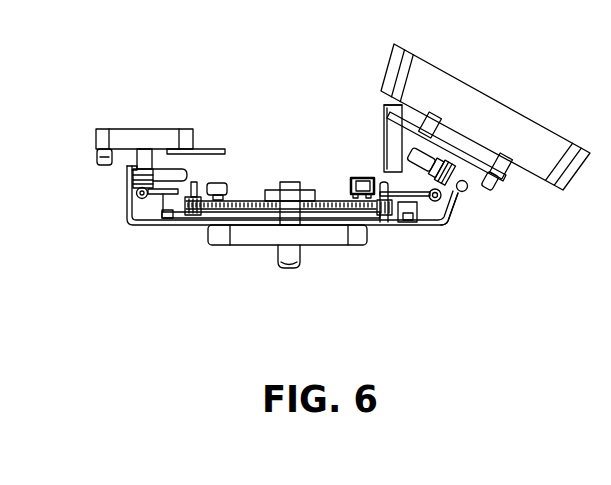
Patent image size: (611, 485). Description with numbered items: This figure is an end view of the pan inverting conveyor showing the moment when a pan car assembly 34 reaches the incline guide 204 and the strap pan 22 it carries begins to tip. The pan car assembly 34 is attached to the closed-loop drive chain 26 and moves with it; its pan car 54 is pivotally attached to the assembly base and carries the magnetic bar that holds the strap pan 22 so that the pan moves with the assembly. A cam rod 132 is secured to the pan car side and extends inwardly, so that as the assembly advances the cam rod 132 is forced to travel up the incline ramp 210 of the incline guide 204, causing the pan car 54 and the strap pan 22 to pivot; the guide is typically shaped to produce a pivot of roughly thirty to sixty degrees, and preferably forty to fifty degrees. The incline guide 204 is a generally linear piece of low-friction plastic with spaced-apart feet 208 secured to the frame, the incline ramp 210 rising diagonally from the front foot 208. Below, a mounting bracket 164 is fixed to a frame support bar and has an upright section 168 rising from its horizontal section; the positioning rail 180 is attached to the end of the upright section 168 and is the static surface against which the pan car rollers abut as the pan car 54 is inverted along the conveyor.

The strap pan 22 is at (534, 153).
The drive chain 26 is at (246, 200).
The pan car assembly 34 is at (96, 142).
The pan car 54 is at (504, 178).
The cam rod 132 is at (424, 113).
The mounting bracket 164 is at (133, 225).
The upright section 168 is at (449, 226).
The positioning rail 180 is at (466, 192).
The incline guide 204 is at (385, 106).
The foot 208 is at (385, 166).
The incline ramp 210 is at (385, 130).